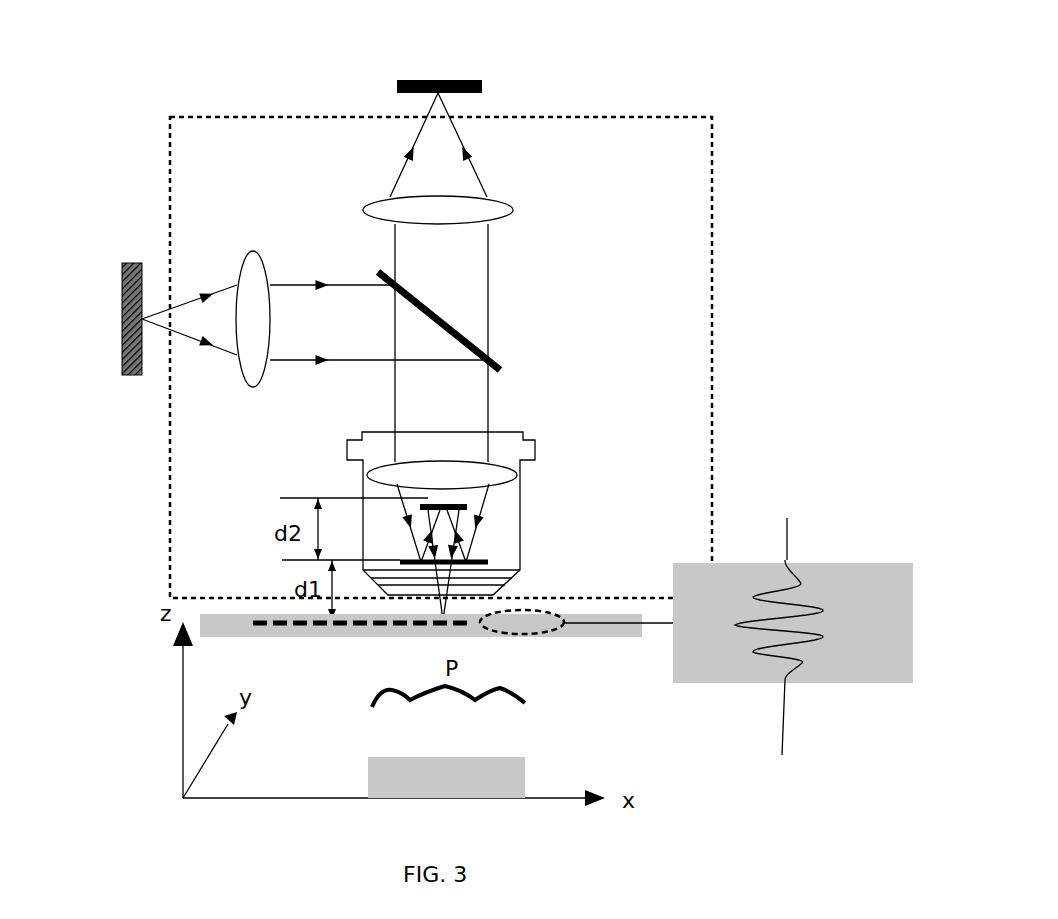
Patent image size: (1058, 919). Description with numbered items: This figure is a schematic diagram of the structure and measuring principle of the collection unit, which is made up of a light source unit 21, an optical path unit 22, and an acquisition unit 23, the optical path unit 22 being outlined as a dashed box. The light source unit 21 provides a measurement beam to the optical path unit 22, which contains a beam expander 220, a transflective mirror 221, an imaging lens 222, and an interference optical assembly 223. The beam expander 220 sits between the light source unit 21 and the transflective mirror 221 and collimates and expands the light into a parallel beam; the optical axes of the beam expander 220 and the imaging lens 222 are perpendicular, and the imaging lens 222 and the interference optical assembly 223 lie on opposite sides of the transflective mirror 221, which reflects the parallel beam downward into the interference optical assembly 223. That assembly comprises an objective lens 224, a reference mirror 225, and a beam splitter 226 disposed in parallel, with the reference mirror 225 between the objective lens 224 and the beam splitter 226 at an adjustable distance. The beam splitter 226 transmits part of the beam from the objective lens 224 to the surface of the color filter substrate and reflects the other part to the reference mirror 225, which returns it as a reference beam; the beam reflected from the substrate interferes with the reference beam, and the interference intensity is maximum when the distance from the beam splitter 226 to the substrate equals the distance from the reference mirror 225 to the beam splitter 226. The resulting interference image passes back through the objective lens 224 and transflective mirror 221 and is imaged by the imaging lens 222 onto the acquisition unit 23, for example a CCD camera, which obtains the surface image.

The light source unit 21 is at (118, 320).
The optical path unit 22 is at (692, 132).
The acquisition unit 23 is at (443, 80).
The beam expander 220 is at (253, 252).
The transflective mirror 221 is at (455, 322).
The imaging lens 222 is at (490, 195).
The interference optical assembly 223 is at (347, 440).
The objective lens 224 is at (490, 465).
The reference mirror 225 is at (467, 507).
The beam splitter 226 is at (490, 557).